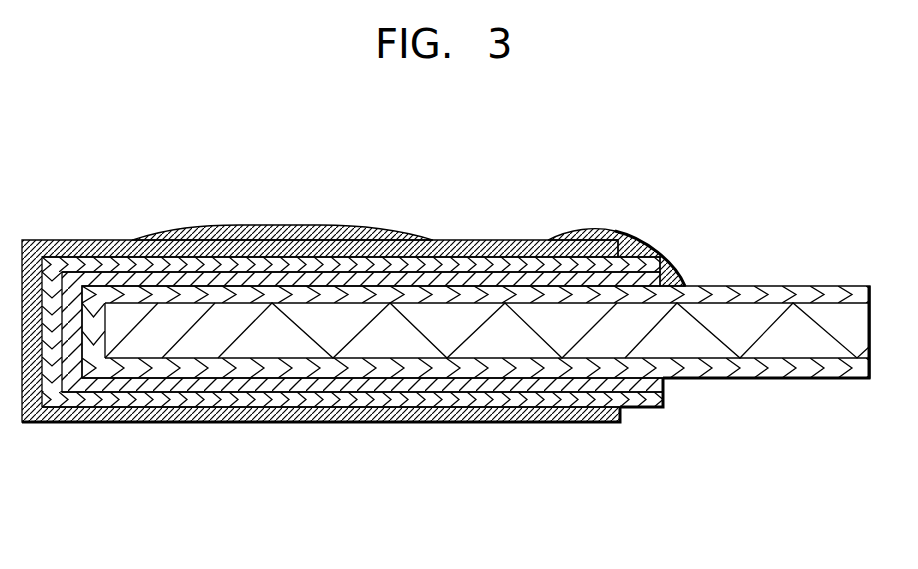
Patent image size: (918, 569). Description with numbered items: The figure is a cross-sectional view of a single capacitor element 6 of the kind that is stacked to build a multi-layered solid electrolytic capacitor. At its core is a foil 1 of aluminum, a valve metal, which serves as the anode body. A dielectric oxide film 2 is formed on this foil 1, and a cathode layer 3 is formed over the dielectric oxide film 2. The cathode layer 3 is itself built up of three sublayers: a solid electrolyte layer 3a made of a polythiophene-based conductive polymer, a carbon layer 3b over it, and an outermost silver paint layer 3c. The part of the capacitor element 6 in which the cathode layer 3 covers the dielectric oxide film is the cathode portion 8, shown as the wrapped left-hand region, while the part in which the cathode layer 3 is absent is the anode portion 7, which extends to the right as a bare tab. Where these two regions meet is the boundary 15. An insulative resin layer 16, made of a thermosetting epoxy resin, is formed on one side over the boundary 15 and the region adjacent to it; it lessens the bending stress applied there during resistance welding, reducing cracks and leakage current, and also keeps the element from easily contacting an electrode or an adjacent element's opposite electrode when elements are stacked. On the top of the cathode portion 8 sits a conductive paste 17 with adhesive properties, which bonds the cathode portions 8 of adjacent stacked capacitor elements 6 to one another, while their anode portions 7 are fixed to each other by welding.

The foil 1 is at (152, 325).
The dielectric oxide film 2 is at (148, 363).
The cathode layer 3 is at (423, 462).
The solid electrolyte layer 3a is at (265, 385).
The carbon layer 3b is at (330, 398).
The silver paint layer 3c is at (388, 412).
The capacitor element 6 is at (120, 170).
The anode portion 7 is at (865, 510).
The cathode portion 8 is at (655, 510).
The boundary 15 is at (665, 392).
The insulative resin layer 16 is at (638, 240).
The conductive paste 17 is at (287, 223).